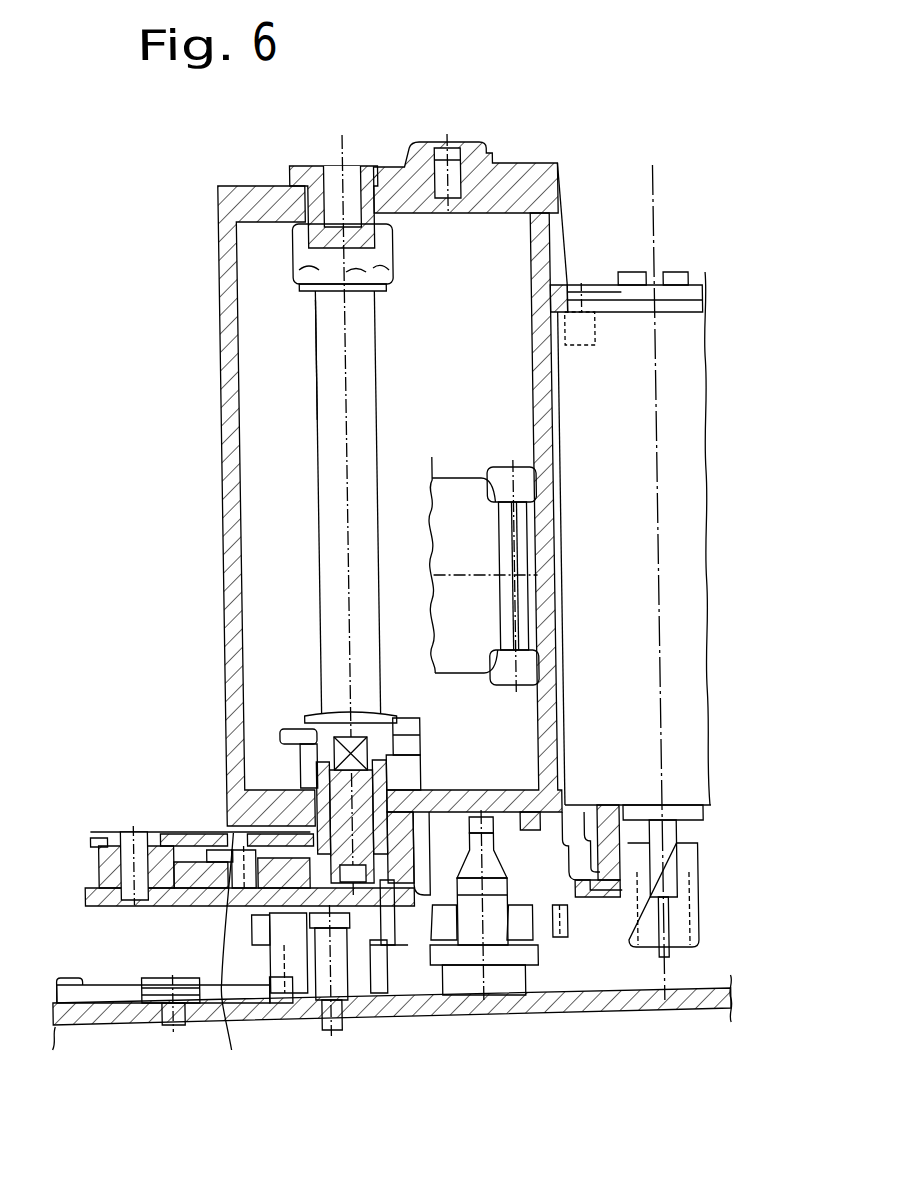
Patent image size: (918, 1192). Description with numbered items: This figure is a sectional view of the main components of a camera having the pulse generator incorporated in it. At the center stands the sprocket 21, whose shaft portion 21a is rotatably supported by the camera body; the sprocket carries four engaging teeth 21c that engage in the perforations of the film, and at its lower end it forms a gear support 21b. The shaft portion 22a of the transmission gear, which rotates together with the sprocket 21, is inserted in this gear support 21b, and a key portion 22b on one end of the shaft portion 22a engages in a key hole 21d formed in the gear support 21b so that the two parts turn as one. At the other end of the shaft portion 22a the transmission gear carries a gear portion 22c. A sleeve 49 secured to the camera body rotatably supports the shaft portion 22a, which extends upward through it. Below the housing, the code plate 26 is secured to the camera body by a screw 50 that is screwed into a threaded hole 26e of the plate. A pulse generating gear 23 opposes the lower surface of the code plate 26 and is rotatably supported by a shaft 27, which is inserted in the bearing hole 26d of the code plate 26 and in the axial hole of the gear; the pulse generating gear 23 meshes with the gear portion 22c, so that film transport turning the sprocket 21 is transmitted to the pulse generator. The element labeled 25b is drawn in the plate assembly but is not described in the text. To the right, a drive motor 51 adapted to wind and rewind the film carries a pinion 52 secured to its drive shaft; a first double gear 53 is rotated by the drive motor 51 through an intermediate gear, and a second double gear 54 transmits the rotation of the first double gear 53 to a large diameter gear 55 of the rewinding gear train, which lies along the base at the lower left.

The sprocket 21 is at (338, 411).
The shaft portion 21a is at (323, 350).
The gear support 21b is at (400, 750).
The engaging teeth 21c is at (282, 730).
The key hole 21d is at (316, 712).
The shaft portion 22a is at (436, 798).
The key portion 22b is at (402, 703).
The gear portion 22c is at (400, 937).
The pulse generating gear 23 is at (190, 873).
The gear 25b is at (222, 850).
The code plate 26 is at (166, 830).
The bearing hole 26d is at (252, 858).
The threaded hole 26e is at (110, 832).
The shaft 27 is at (219, 1050).
The sleeve 49 is at (393, 790).
The screw 50 is at (126, 832).
The drive motor 51 is at (679, 490).
The pinion 52 is at (637, 937).
The first double gear 53 is at (531, 922).
The second double gear 54 is at (350, 983).
The large diameter gear 55 is at (105, 996).